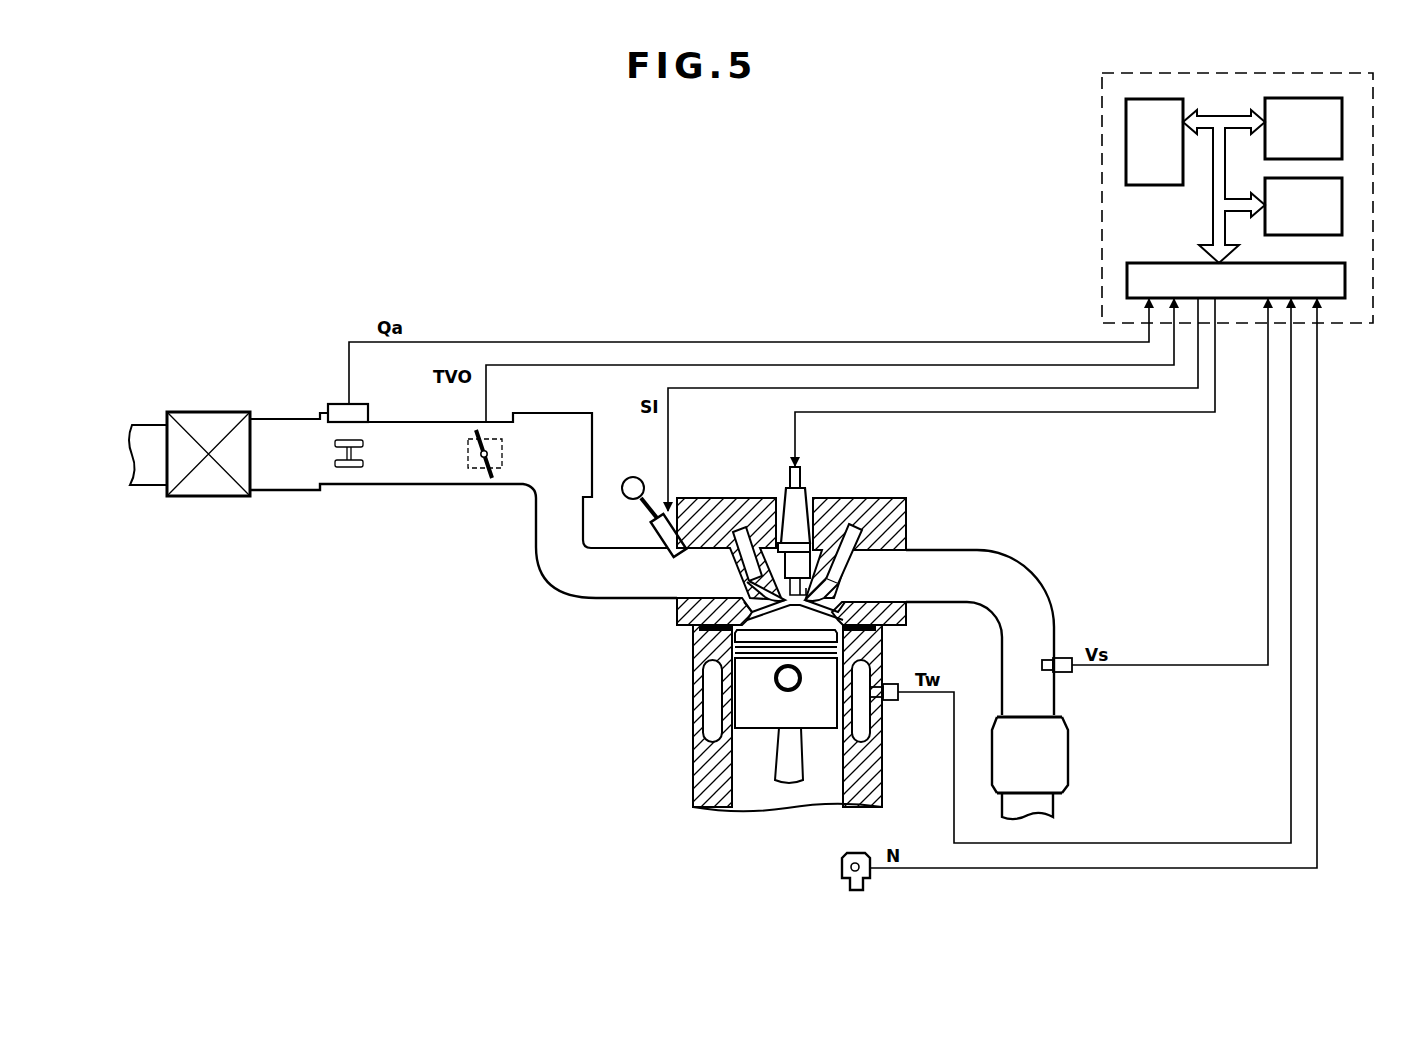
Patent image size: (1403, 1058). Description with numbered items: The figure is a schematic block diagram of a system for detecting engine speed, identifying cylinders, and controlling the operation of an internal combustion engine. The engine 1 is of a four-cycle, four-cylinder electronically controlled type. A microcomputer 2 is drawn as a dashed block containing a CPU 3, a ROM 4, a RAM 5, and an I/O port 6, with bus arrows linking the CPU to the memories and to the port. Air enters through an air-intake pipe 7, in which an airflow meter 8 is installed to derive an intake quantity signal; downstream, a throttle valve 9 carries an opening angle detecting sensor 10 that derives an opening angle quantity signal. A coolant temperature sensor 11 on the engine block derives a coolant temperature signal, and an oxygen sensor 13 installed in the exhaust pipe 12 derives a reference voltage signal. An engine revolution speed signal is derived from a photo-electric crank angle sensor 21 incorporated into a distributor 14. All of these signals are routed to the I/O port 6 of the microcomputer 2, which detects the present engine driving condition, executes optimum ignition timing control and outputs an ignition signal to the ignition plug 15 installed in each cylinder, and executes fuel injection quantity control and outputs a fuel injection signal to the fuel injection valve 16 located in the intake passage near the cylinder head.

The engine 1 is at (684, 762).
The microcomputer 2 is at (1102, 112).
The CPU 3 is at (1150, 186).
The ROM 4 is at (1265, 110).
The RAM 5 is at (1265, 186).
The I/O port 6 is at (1161, 263).
The air-intake pipe 7 is at (400, 486).
The airflow meter 8 is at (345, 404).
The throttle valve 9 is at (472, 432).
The opening angle detecting sensor 10 is at (502, 462).
The coolant temperature sensor 11 is at (893, 700).
The exhaust pipe 12 is at (1012, 582).
The oxygen sensor 13 is at (1067, 672).
The distributor 14 is at (842, 858).
The ignition plug 15 is at (822, 540).
The fuel injection valve 16 is at (650, 535).
The crank angle sensor 21 is at (860, 870).